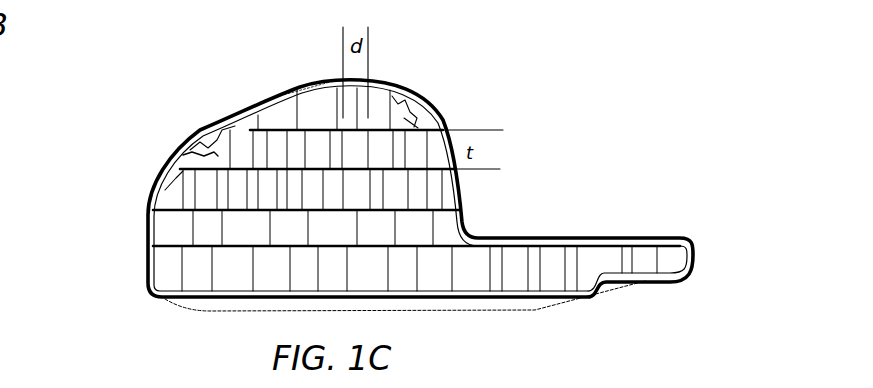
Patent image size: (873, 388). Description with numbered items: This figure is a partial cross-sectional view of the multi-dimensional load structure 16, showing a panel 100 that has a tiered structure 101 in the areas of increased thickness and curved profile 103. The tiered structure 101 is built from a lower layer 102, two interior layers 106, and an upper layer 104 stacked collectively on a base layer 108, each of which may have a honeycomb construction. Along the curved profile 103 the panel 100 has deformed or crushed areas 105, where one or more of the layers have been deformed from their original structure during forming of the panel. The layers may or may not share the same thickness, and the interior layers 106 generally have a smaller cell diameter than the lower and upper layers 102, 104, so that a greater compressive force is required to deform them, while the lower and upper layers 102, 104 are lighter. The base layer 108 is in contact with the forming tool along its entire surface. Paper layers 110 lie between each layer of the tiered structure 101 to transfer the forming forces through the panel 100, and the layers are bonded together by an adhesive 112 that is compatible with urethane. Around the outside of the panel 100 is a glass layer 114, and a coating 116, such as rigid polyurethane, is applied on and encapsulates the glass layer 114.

The aircraft panel 16 is at (319, 64).
The panel 100 is at (437, 160).
The tiered structure 101 is at (580, 79).
The lower layer 102 is at (173, 233).
The curved profile 103 is at (277, 97).
The upper layer 104 is at (263, 107).
The deformed or crushed area 105 is at (200, 143).
The interior layer 106 is at (213, 155).
The base layer 108 is at (160, 272).
The paper layer 110 is at (475, 99).
The adhesive 112 is at (413, 126).
The glass layer 114 is at (643, 242).
The coating 116 is at (577, 235).